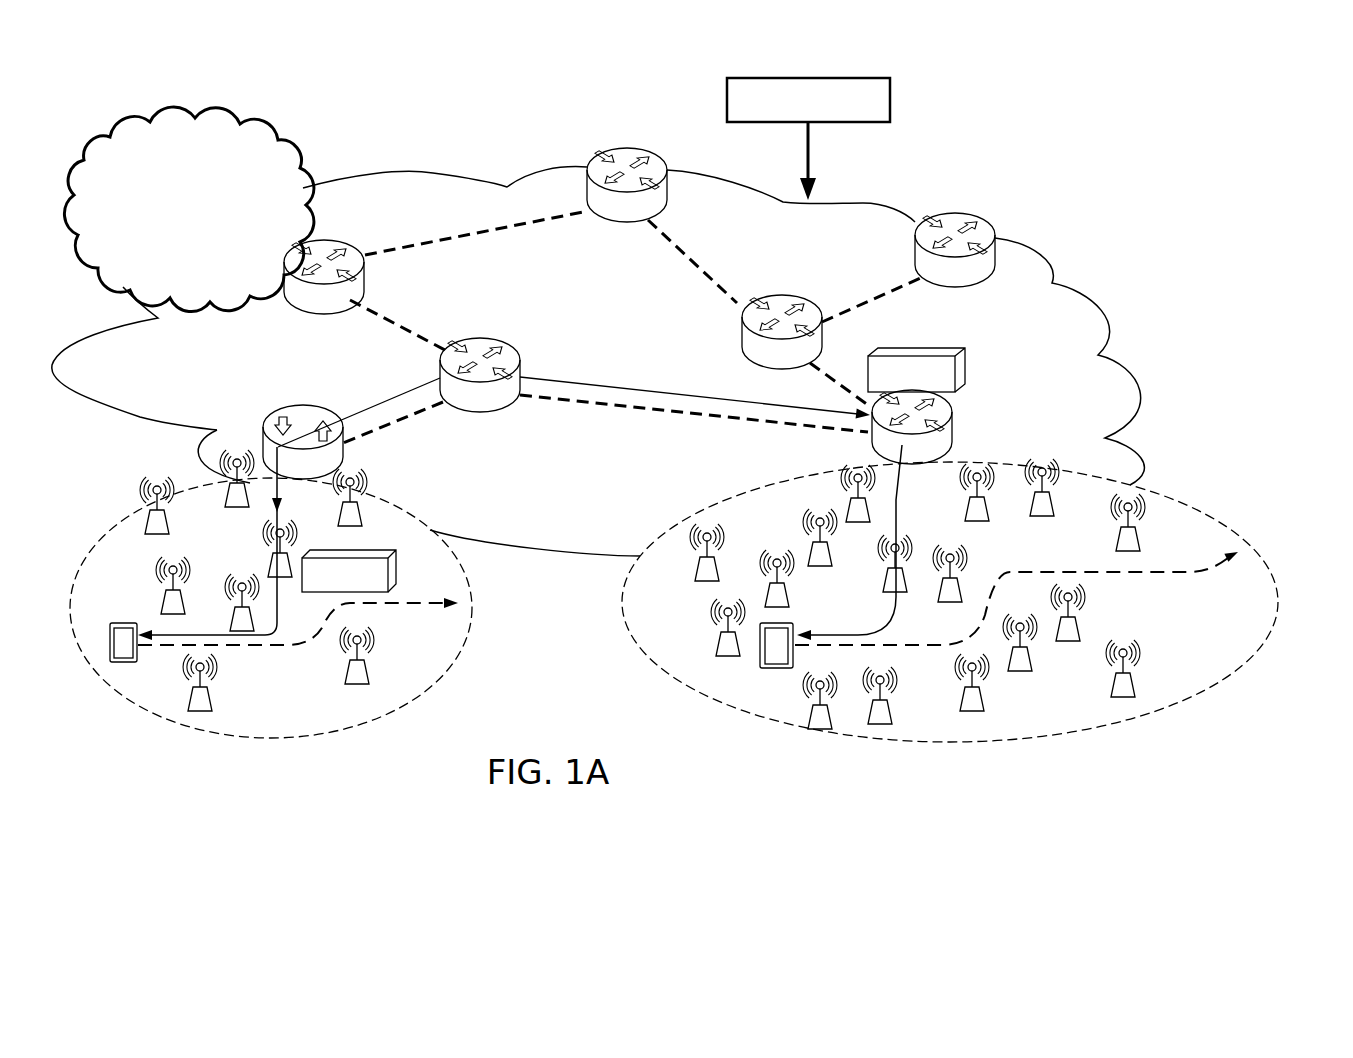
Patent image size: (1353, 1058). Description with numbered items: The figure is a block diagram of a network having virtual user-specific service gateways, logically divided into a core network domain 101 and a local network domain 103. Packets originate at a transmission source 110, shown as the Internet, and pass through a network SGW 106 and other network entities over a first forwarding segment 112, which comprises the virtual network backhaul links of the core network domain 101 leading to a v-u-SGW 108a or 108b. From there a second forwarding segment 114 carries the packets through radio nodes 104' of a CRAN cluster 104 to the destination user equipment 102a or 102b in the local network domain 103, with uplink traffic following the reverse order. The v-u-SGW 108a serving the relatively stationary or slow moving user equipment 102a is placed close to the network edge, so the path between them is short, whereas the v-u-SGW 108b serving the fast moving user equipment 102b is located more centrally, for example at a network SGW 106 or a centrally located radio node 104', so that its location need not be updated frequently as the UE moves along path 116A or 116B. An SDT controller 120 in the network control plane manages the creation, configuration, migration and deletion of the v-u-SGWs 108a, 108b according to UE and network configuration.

The core network domain 101 is at (1287, 170).
The local network domain 103 is at (1287, 483).
The user equipment 102a is at (125, 663).
The user equipment 102b is at (778, 670).
The CRAN cluster 104 is at (674, 631).
The radio node 104' is at (542, 687).
The network SGW 106 is at (480, 340).
The virtual user-specific SGW 108a is at (378, 548).
The virtual user-specific SGW 108b is at (975, 363).
The transmission source 110 is at (170, 242).
The first forwarding segment 112 is at (375, 400).
The second forwarding segment 114 is at (140, 632).
The path 116A is at (277, 645).
The path 116B is at (1170, 572).
The SDT controller 120 is at (892, 104).